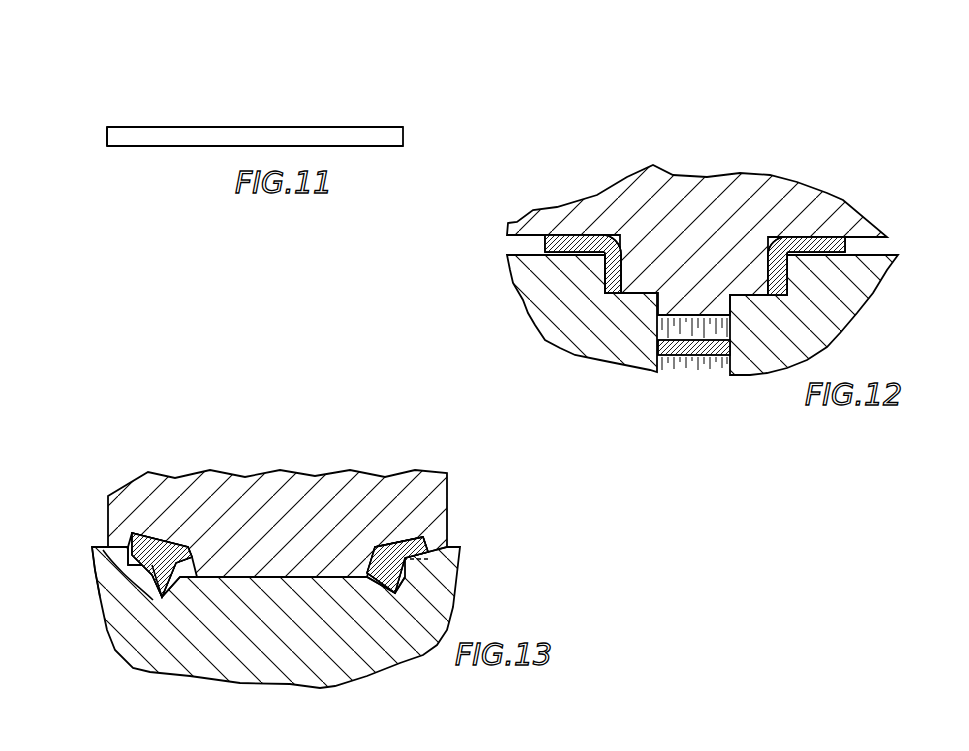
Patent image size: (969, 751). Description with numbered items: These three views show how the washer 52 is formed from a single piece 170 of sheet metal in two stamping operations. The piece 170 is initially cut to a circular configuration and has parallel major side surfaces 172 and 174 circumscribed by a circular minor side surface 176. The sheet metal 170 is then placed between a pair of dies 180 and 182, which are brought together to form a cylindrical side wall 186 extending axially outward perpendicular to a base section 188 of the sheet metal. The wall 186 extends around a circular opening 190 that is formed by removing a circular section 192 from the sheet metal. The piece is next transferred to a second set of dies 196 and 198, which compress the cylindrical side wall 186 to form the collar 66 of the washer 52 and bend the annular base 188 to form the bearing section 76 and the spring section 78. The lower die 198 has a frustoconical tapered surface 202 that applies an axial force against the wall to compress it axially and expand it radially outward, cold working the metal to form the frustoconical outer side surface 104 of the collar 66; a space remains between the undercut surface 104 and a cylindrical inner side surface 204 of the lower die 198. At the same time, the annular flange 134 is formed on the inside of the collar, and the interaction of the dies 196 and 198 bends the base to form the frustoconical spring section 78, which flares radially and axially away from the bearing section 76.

In FIG. 11, the piece of sheet metal 170 is at (367, 123).
In FIG. 12, the piece of sheet metal 170 is at (846, 240).
In FIG. 11, the major side surface 172 is at (165, 127).
In FIG. 11, the major side surface 174 is at (167, 147).
In FIG. 11, the circular minor side surface 176 is at (107, 134).
In FIG. 12, the die 180 is at (648, 188).
In FIG. 12, the die 182 is at (552, 330).
In FIG. 12, the cylindrical side wall 186 is at (608, 275).
In FIG. 12, the base section 188 is at (566, 240).
In FIG. 12, the circular opening 190 is at (768, 347).
In FIG. 12, the circular section 192 is at (692, 356).
In FIG. 13, the die 196 is at (440, 495).
In FIG. 13, the lower die 198 is at (388, 657).
In FIG. 13, the annular flange 134 is at (198, 566).
In FIG. 13, the spring section 78 is at (411, 537).
In FIG. 13, the bearing section 76 is at (380, 550).
In FIG. 13, the washer 52 is at (432, 555).
In FIG. 13, the collar 66 is at (400, 583).
In FIG. 13, the cylindrical inner side surface 204 is at (98, 548).
In FIG. 13, the frustoconical outer side surface 104 is at (155, 580).
In FIG. 13, the frustoconical tapered surface 202 is at (173, 586).